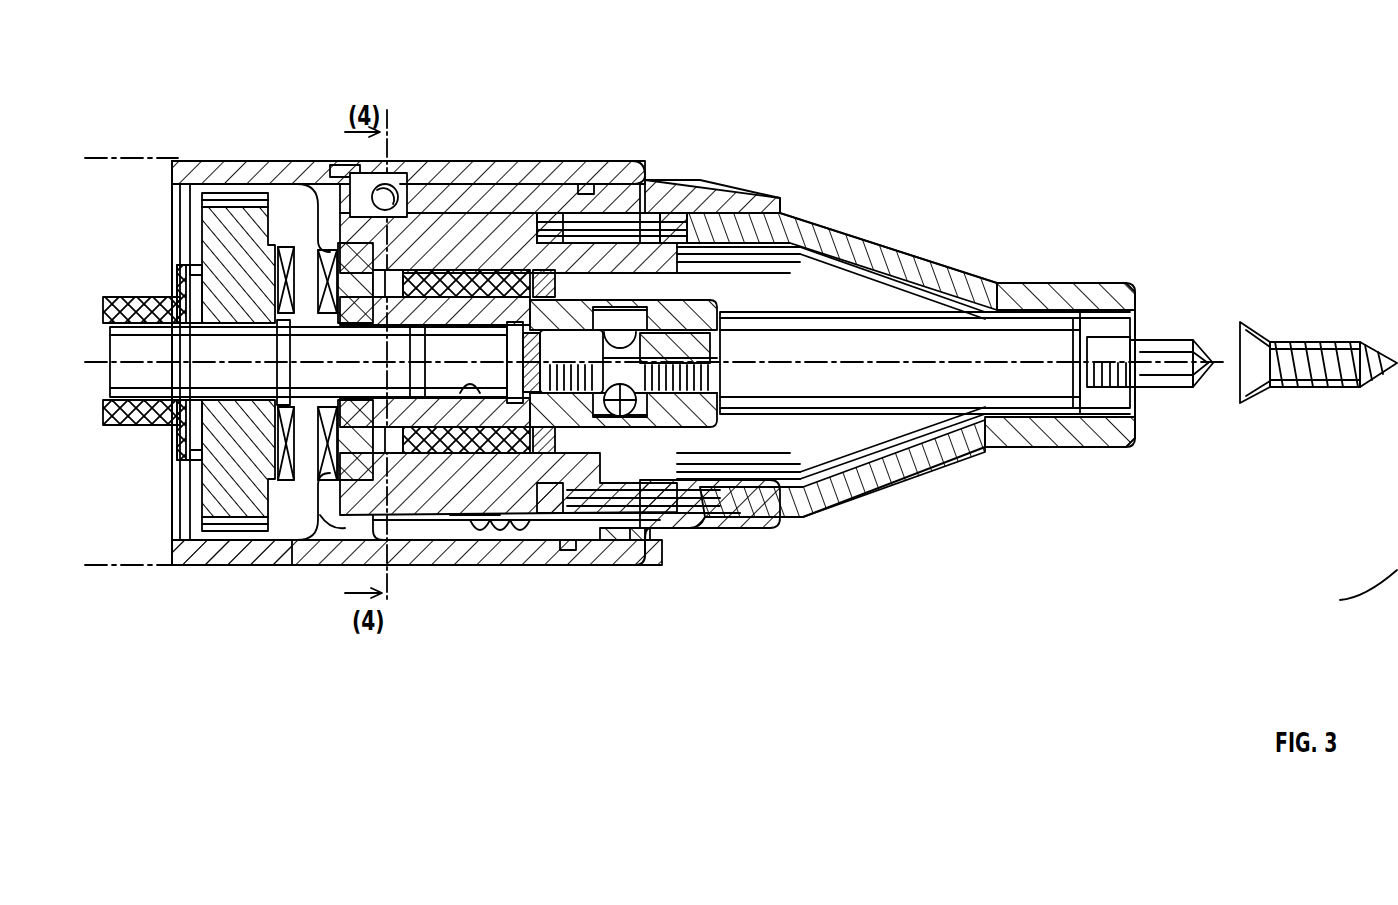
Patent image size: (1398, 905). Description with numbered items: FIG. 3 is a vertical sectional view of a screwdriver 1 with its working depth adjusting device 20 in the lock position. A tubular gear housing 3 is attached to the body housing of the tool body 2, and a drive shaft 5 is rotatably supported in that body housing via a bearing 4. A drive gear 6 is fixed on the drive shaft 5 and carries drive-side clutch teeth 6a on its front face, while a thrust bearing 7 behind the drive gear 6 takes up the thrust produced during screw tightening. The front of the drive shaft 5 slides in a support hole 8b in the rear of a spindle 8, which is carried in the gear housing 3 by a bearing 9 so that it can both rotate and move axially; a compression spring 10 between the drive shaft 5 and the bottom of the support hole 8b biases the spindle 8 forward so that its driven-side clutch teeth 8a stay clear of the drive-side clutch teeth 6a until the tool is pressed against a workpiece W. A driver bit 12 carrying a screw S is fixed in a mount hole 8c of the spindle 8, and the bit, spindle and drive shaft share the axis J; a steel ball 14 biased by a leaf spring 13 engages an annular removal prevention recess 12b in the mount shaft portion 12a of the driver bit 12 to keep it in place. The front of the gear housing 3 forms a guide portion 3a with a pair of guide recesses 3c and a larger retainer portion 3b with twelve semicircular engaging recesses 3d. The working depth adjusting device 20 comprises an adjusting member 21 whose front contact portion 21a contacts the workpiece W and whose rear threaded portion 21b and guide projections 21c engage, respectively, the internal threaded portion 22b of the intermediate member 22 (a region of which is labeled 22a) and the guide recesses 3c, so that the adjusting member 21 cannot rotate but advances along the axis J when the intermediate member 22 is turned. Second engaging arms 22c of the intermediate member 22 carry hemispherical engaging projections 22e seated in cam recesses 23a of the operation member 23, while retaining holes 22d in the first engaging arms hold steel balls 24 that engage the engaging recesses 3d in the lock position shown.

The screwdriver 1 is at (197, 150).
The tool body 2 is at (108, 156).
The gear housing 3 is at (215, 160).
The guide portion 3a is at (690, 500).
The retainer portion 3b is at (540, 268).
The guide recesses 3c is at (586, 184).
The engaging recesses 3d is at (345, 165).
The bearing 4 is at (151, 432).
The drive shaft 5 is at (172, 165).
The drive gear 6 is at (232, 520).
The drive-side clutch teeth 6a is at (285, 535).
The thrust bearing 7 is at (190, 548).
The spindle 8 is at (548, 250).
The driven-side clutch teeth 8a is at (290, 163).
The support hole 8b is at (500, 482).
The mount hole 8c is at (700, 302).
The bearing 9 is at (462, 268).
The compression spring 10 is at (468, 395).
The driver bit 12 is at (880, 330).
The mount shaft portion 12a is at (720, 483).
The annular removal prevention recess 12b is at (728, 325).
The leaf spring 13 is at (705, 215).
The steel ball 14 is at (672, 522).
The working depth adjusting device 20 is at (634, 160).
The adjusting member 21 is at (965, 272).
The contact portion 21a is at (1143, 288).
The threaded portion 21b is at (616, 542).
The guide projections 21c is at (652, 213).
The intermediate member 22 is at (783, 533).
The sleeve portion 22a is at (610, 168).
The internal threaded portion 22b is at (482, 184).
The second engaging arms 22c is at (472, 518).
The retaining hole 22d is at (420, 168).
The engaging projection 22e is at (405, 545).
The operation member 23 is at (588, 568).
The cam recesses 23a is at (335, 532).
The steel balls 24 is at (387, 184).
The axis J is at (1023, 320).
The screw S is at (1300, 388).
The workpiece W is at (1355, 596).